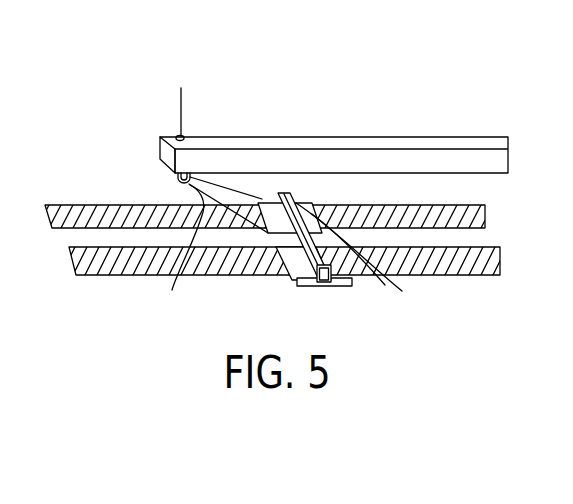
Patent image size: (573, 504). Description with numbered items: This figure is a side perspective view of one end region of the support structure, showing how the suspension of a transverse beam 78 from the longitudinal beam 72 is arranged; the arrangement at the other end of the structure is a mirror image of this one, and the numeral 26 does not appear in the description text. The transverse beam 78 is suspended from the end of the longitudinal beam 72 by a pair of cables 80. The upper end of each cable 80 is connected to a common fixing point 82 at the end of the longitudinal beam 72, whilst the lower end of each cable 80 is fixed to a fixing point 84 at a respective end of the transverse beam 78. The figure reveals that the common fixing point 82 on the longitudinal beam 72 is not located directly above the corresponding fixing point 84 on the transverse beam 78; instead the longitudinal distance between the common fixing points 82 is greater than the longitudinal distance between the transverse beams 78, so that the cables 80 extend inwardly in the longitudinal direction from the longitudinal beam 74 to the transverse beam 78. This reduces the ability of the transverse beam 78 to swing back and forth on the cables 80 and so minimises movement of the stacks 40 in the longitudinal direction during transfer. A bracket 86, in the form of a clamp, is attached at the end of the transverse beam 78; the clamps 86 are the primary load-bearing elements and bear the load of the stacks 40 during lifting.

The fastening assembly 26 is at (144, 72).
The stacks 40 is at (135, 226).
The longitudinal beam 72 is at (298, 153).
The longitudinal beam 74 is at (183, 103).
The transverse beam 78 is at (328, 281).
The cables 80 is at (214, 248).
The common fixing point 82 is at (177, 180).
The fixing point 84 is at (359, 253).
The bracket 86 is at (298, 278).